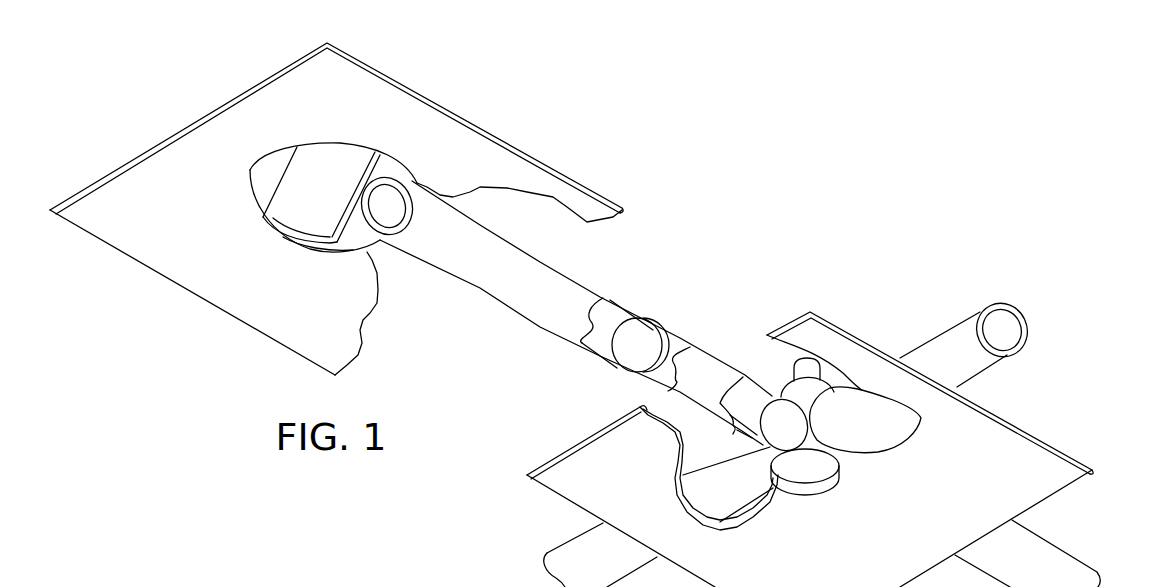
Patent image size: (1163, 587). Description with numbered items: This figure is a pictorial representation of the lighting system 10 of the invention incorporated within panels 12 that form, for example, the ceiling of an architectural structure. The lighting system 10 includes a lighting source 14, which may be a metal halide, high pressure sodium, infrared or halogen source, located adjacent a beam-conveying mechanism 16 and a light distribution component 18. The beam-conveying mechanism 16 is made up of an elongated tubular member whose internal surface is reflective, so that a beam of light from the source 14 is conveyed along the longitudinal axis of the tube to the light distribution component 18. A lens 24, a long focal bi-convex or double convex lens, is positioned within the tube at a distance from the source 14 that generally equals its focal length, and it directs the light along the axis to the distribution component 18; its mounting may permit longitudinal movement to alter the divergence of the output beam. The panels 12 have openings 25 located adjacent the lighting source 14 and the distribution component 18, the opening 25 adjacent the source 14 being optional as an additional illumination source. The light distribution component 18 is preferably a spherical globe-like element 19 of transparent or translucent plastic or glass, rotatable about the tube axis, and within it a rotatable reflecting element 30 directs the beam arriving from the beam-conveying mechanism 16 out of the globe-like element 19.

The lighting system 10 is at (648, 274).
The panels 12 is at (457, 131).
The lighting source 14 is at (832, 374).
The beam-conveying mechanism 16 is at (505, 314).
The light distribution component 18 is at (340, 252).
The globe-like element 19 is at (382, 167).
The lens 24 is at (642, 343).
The openings 25 is at (279, 148).
The reflecting element 30 is at (330, 167).